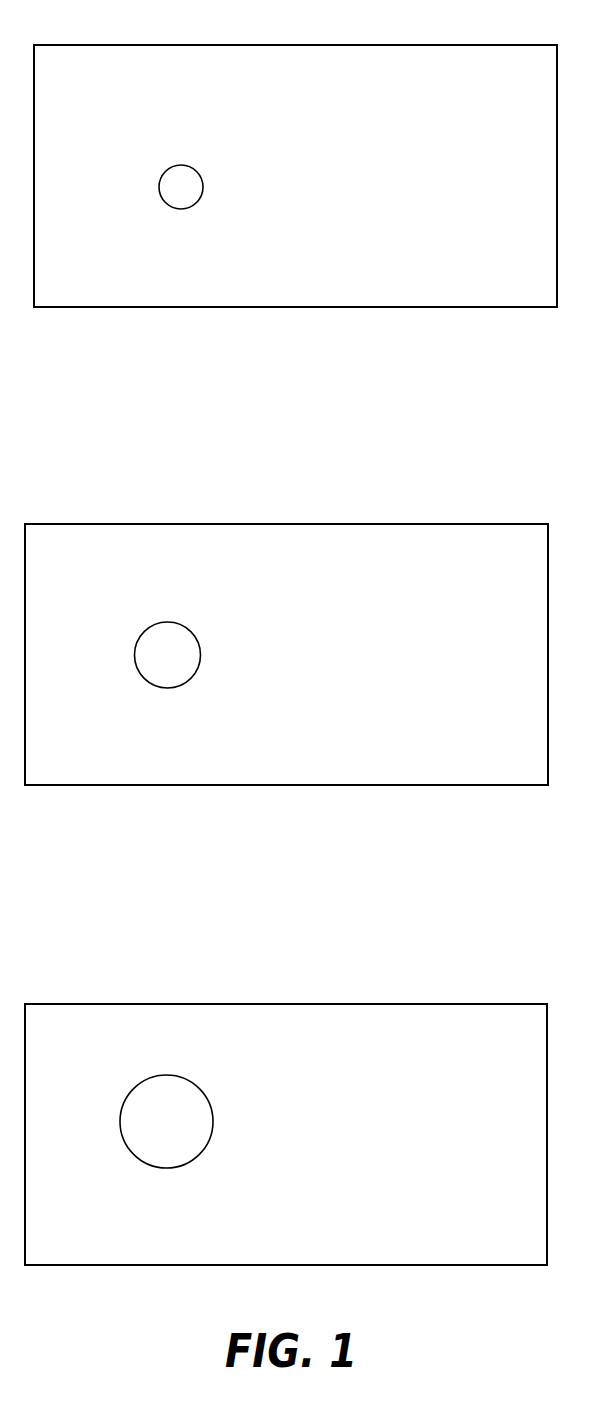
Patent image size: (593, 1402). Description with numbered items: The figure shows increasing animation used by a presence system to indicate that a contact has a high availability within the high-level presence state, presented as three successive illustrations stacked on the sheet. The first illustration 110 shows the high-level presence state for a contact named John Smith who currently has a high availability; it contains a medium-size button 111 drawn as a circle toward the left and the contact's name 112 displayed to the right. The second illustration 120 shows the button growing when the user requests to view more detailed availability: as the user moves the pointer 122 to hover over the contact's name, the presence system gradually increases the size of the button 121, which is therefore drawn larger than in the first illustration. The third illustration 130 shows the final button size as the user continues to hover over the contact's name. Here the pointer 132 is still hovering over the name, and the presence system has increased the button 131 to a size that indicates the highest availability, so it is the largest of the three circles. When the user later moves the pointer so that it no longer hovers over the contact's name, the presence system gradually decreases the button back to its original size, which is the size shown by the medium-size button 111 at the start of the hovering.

The illustration 110 is at (295, 164).
The medium-size button 111 is at (141, 215).
The contact's name 112 is at (373, 198).
The illustration 120 is at (286, 643).
The button 121 is at (131, 685).
The pointer 122 is at (356, 682).
The illustration 130 is at (286, 1122).
The button 131 is at (137, 1152).
The pointer 132 is at (356, 1162).